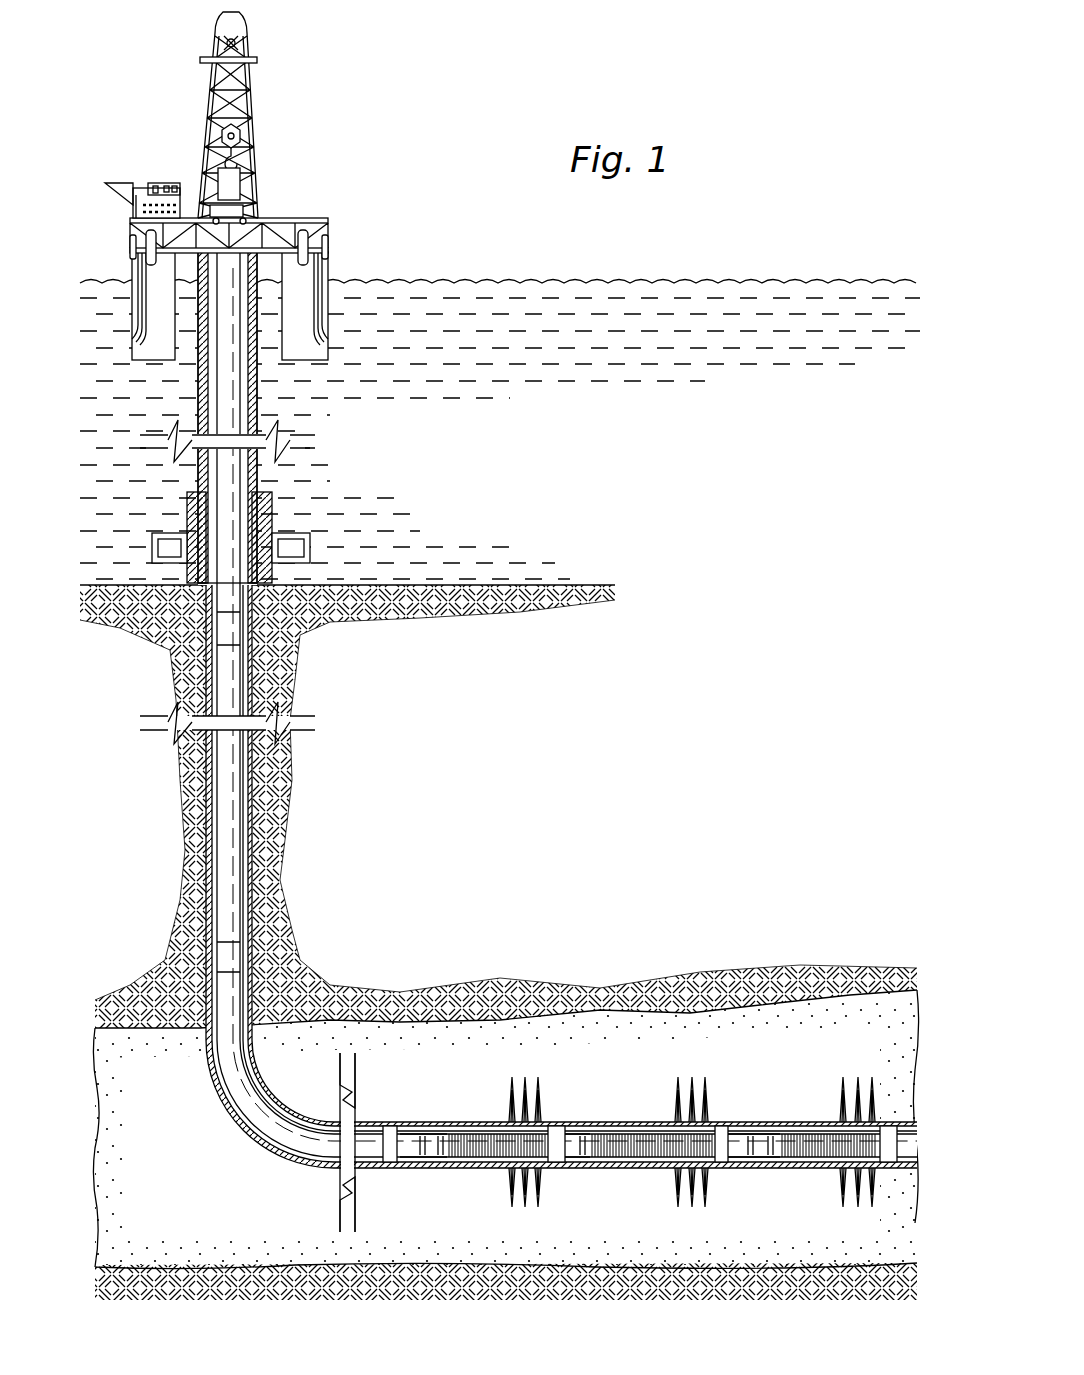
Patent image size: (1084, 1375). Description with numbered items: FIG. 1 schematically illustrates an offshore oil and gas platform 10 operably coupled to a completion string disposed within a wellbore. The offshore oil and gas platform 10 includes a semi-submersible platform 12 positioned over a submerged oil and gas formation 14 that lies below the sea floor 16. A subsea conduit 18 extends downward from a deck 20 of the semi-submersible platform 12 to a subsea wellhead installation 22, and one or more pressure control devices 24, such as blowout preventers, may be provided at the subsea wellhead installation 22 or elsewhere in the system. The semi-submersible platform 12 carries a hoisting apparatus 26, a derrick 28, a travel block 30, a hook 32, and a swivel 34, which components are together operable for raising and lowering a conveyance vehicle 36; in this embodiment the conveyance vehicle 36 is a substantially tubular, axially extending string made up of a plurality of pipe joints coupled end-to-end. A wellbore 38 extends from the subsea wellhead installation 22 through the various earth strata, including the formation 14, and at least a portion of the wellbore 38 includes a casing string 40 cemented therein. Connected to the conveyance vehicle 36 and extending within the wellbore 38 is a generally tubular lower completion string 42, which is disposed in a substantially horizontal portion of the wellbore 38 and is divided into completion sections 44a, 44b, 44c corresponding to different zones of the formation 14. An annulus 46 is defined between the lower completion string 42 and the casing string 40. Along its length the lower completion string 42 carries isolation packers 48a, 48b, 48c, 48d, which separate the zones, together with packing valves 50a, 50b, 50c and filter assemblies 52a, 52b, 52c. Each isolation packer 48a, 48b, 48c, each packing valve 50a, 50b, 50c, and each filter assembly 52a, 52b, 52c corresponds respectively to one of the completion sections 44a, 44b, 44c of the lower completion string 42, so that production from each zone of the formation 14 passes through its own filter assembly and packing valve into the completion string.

The offshore oil and gas platform 10 is at (322, 105).
The semi-submersible platform 12 is at (318, 218).
The oil and gas formation 14 is at (196, 1180).
The sea floor 16 is at (588, 585).
The subsea conduit 18 is at (256, 410).
The deck 20 is at (332, 248).
The subsea wellhead installation 22 is at (183, 518).
The pressure control device 24 is at (293, 545).
The hoisting apparatus 26 is at (255, 197).
The derrick 28 is at (213, 42).
The travel block 30 is at (225, 135).
The hook 32 is at (232, 160).
The swivel 34 is at (243, 173).
The conveyance vehicle 36 is at (225, 788).
The wellbore 38 is at (255, 780).
The casing string 40 is at (250, 863).
The lower completion string 42 is at (493, 1054).
The completion section 44a is at (473, 1170).
The completion section 44b is at (638, 1170).
The completion section 44c is at (805, 1170).
The annulus 46 is at (437, 1157).
The isolation packer 48a is at (390, 1158).
The isolation packer 48b is at (550, 1157).
The isolation packer 48c is at (720, 1157).
The isolation packer 48d is at (888, 1128).
The packing valve 50a is at (418, 1137).
The packing valve 50b is at (578, 1137).
The packing valve 50c is at (747, 1137).
The filter assembly 52a is at (478, 1137).
The filter assembly 52b is at (640, 1133).
The filter assembly 52c is at (818, 1133).